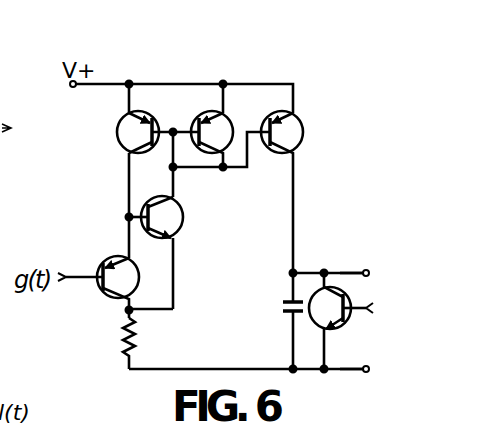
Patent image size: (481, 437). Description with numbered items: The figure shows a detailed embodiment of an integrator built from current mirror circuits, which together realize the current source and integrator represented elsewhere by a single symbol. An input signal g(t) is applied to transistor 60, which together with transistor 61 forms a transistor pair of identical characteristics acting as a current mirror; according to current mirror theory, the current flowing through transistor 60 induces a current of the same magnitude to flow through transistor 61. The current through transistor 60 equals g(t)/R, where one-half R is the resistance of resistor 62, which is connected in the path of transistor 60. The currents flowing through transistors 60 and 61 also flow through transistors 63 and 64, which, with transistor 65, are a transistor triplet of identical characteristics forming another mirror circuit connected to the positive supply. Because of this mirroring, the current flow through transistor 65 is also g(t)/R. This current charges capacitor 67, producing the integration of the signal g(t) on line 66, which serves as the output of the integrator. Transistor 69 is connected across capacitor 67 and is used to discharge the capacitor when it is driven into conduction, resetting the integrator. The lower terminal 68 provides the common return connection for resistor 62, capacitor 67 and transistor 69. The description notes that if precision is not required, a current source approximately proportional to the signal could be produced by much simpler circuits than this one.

The transistor 60 is at (108, 298).
The transistor 61 is at (184, 221).
The resistor 62 is at (125, 340).
The transistor 63 is at (117, 135).
The transistor 64 is at (204, 113).
The transistor 65 is at (304, 124).
The line 66 is at (357, 272).
The capacitor 67 is at (282, 306).
The ground terminal 68 is at (352, 371).
The transistor 69 is at (328, 324).